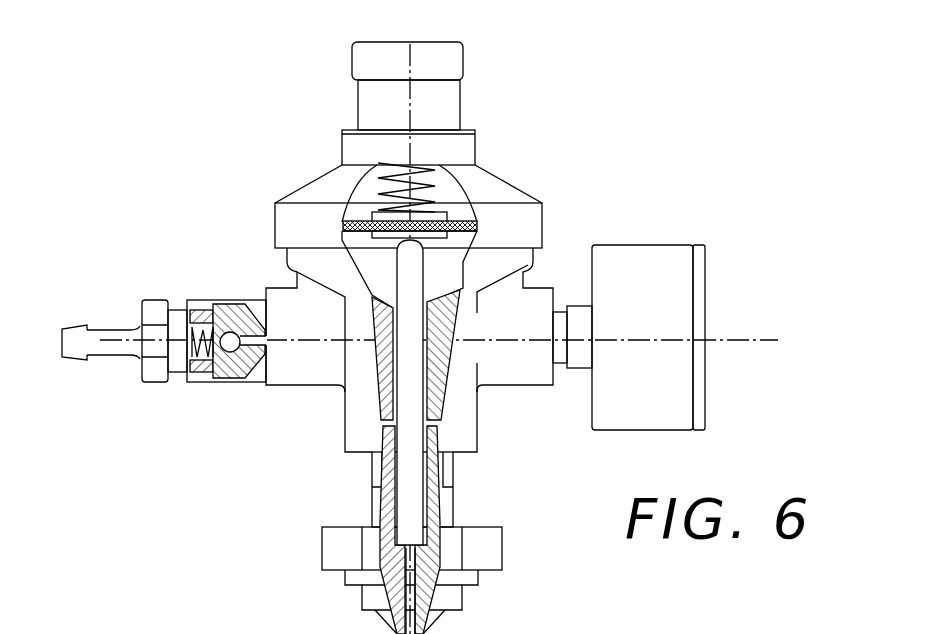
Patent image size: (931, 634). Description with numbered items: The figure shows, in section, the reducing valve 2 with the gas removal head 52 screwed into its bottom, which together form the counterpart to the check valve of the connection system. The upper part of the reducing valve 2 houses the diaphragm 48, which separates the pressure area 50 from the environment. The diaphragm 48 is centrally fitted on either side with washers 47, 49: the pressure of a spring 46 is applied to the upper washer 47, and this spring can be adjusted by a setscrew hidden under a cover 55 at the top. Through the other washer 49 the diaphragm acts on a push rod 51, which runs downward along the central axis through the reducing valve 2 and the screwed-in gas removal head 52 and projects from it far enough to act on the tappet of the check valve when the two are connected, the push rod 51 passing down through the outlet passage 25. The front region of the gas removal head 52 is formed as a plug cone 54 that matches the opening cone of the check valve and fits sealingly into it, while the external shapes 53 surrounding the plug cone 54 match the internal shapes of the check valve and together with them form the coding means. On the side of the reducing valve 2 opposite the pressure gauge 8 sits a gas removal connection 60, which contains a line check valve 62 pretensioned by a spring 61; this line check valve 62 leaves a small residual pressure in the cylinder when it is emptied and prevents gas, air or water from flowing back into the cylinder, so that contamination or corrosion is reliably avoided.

The reducing valve 2 is at (540, 98).
The pressure gauge 8 is at (670, 283).
The outlet passage 25 is at (464, 591).
The spring 46 is at (378, 190).
The upper washer 47 is at (447, 208).
The diaphragm 48 is at (345, 220).
The lower washer 49 is at (445, 233).
The pressure area 50 is at (363, 250).
The push rod 51 is at (403, 497).
The gas removal head 52 is at (333, 542).
The external shapes 53 is at (453, 582).
The plug cone 54 is at (397, 613).
The cover 55 is at (377, 60).
The gas removal connection 60 is at (153, 370).
The spring 61 is at (180, 310).
The line check valve 62 is at (233, 347).